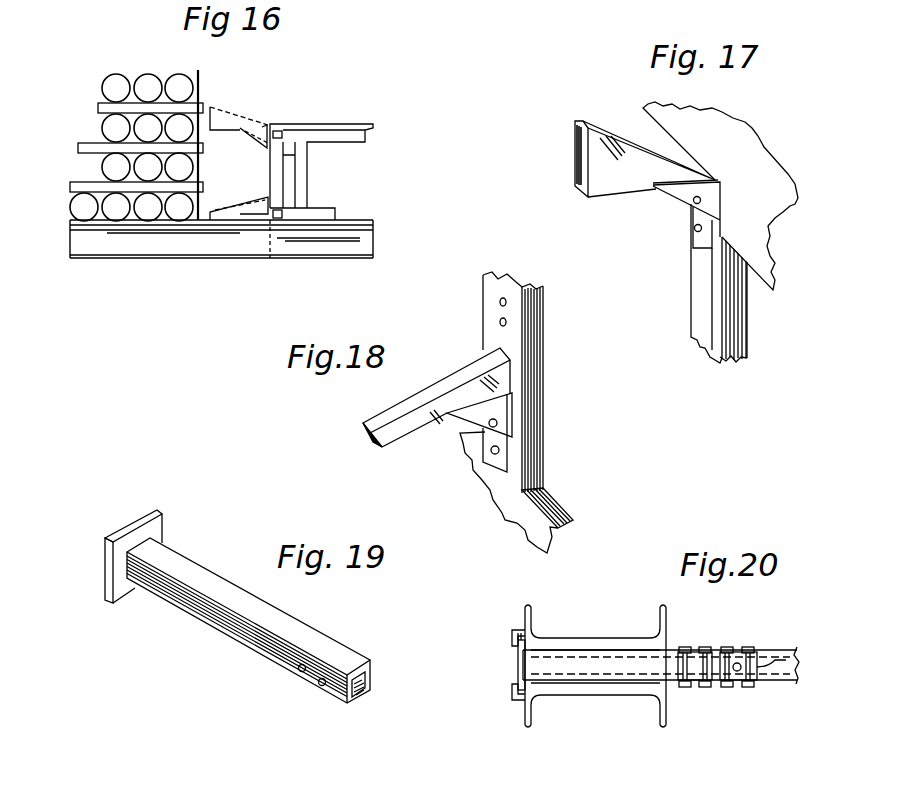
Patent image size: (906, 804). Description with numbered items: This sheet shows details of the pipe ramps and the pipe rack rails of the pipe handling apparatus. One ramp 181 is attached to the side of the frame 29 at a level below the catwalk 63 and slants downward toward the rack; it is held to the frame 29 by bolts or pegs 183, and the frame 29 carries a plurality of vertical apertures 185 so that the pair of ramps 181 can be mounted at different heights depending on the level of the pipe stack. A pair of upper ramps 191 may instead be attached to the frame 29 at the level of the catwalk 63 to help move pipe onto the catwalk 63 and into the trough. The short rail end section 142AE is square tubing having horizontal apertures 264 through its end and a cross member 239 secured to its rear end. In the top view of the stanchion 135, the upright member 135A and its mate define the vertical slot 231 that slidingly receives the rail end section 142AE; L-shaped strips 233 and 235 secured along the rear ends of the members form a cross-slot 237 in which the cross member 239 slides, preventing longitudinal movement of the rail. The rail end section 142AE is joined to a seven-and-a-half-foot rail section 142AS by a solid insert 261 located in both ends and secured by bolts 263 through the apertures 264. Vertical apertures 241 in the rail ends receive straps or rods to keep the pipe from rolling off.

In FIG. 18, the frame 29 is at (568, 477).
In FIG. 16, the catwalk 63 is at (347, 122).
In FIG. 20, the stanchion 135 is at (583, 737).
In FIG. 20, the upright member of stanchion 135A is at (553, 697).
In FIG. 19, the rail end section 142AE is at (240, 648).
In FIG. 20, the rail end section 142AE is at (608, 670).
In FIG. 20, the rail section 142AS is at (798, 683).
In FIG. 16, the ramp 181 is at (233, 222).
In FIG. 18, the ramp 181 is at (417, 432).
In FIG. 18, the bolts or pegs 183 is at (499, 450).
In FIG. 18, the vertical apertures 185 is at (507, 322).
In FIG. 16, the ramp 191 is at (250, 110).
In FIG. 20, the vertical slot 231 is at (670, 687).
In FIG. 20, the L-shaped strip 233 is at (512, 697).
In FIG. 20, the L-shaped strip 235 is at (512, 632).
In FIG. 20, the cross-slot 237 is at (521, 632).
In FIG. 19, the cross member 239 is at (138, 517).
In FIG. 20, the cross member 239 is at (517, 667).
In FIG. 20, the vertical apertures 241 is at (737, 663).
In FIG. 20, the solid insert 261 is at (783, 670).
In FIG. 20, the bolts 263 is at (748, 687).
In FIG. 19, the horizontal apertures 264 is at (322, 687).